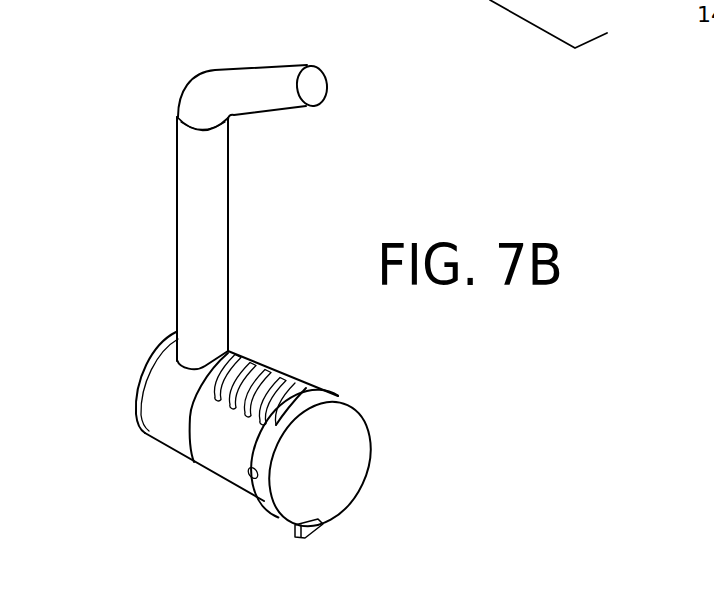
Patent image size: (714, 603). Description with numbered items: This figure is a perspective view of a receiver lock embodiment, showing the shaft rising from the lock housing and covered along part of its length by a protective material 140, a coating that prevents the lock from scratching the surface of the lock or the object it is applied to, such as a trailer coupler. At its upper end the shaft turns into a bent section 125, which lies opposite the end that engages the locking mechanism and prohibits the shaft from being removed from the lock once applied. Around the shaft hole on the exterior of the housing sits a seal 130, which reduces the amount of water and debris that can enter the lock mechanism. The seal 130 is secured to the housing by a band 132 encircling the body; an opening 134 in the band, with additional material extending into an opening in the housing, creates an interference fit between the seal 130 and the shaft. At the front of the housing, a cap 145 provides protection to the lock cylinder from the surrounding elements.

The bent section 125 is at (215, 98).
The protective material 140 is at (188, 222).
The opening 134 is at (192, 365).
The band 132 is at (147, 391).
The seal 130 is at (157, 427).
The cap 145 is at (346, 456).